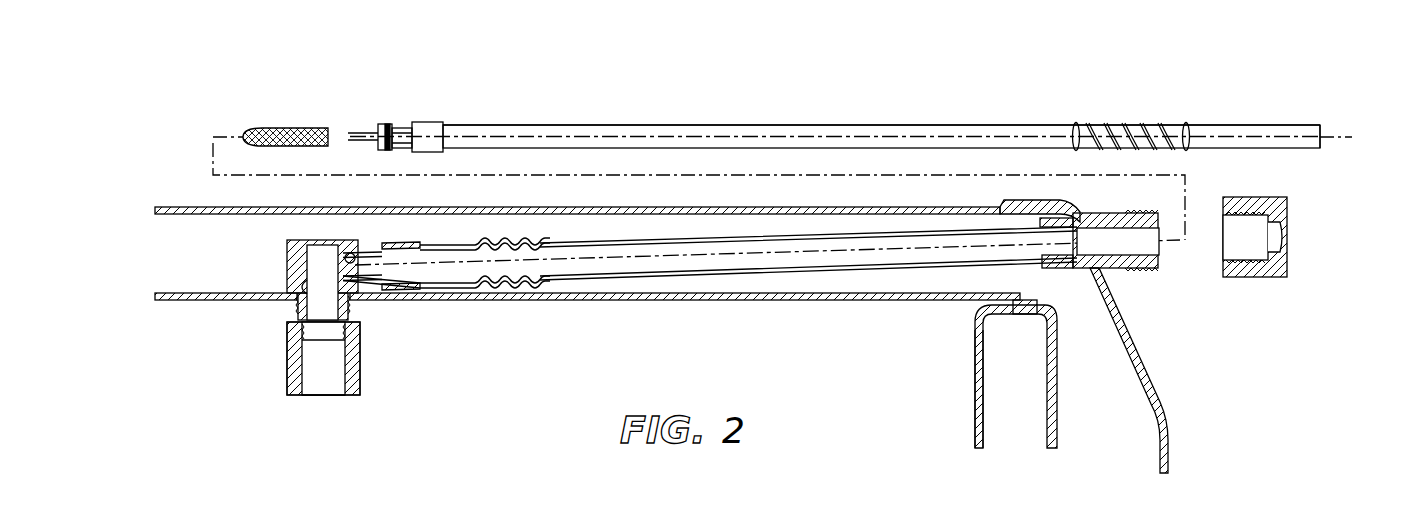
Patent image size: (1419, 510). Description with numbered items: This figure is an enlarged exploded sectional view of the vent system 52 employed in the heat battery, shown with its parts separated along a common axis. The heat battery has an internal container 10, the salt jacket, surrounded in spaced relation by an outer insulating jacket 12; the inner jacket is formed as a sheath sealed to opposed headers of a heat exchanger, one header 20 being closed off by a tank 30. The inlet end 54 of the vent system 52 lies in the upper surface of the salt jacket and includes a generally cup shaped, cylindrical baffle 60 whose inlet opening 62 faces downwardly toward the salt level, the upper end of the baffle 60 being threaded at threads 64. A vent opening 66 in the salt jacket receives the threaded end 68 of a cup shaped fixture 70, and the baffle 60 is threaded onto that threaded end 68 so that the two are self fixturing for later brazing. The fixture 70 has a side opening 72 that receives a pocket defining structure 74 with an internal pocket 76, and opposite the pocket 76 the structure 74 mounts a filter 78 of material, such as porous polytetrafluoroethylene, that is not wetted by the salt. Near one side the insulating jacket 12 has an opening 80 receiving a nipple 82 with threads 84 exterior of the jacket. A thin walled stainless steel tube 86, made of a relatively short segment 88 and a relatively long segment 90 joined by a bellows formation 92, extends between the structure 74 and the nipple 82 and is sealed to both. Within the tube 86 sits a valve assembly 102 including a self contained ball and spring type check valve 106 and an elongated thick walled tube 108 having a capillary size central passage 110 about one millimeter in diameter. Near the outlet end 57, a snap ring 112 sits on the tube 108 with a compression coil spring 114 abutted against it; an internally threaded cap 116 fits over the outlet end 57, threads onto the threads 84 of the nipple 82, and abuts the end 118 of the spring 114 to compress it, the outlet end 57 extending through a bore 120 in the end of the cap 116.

The internal container 10 is at (838, 301).
The insulating jacket 12 is at (1150, 362).
The header 20 is at (975, 395).
The tank 30 is at (1058, 372).
The vent system 52 is at (842, 128).
The inlet end 54 is at (350, 405).
The outlet end 57 is at (1292, 126).
The baffle 60 is at (360, 360).
The inlet opening 62 is at (318, 396).
The threads 64 is at (298, 347).
The vent opening 66 is at (293, 286).
The threaded end 68 is at (348, 310).
The cup shaped fixture 70 is at (287, 265).
The side opening 72 is at (357, 254).
The pocket defining structure 74 is at (398, 248).
The internal pocket 76 is at (465, 258).
The filter 78 is at (305, 126).
The opening 80 is at (1085, 232).
The nipple 82 is at (1065, 270).
The threads 84 is at (1142, 272).
The stainless steel tube 86 is at (712, 301).
The short segment 88 is at (465, 301).
The long segment 90 is at (605, 243).
The bellows formation 92 is at (512, 301).
The valve assembly 102 is at (660, 128).
The check valve 106 is at (427, 133).
The thick walled tube 108 is at (552, 126).
The central passage 110 is at (520, 135).
The snap ring 112 is at (1072, 128).
The compression coil spring 114 is at (1110, 124).
The cap 116 is at (1245, 200).
The spring end 118 is at (1189, 123).
The bore 120 is at (1282, 240).